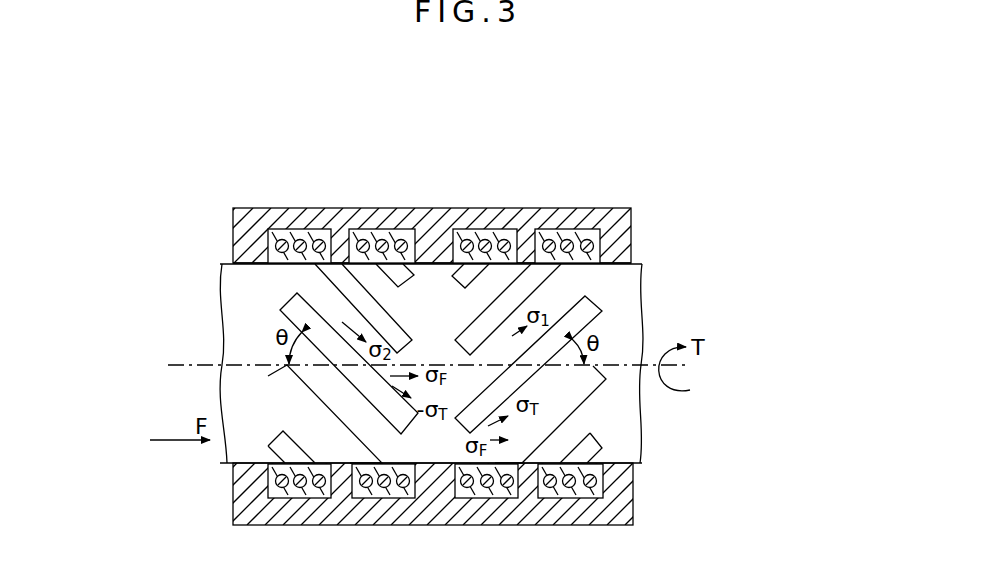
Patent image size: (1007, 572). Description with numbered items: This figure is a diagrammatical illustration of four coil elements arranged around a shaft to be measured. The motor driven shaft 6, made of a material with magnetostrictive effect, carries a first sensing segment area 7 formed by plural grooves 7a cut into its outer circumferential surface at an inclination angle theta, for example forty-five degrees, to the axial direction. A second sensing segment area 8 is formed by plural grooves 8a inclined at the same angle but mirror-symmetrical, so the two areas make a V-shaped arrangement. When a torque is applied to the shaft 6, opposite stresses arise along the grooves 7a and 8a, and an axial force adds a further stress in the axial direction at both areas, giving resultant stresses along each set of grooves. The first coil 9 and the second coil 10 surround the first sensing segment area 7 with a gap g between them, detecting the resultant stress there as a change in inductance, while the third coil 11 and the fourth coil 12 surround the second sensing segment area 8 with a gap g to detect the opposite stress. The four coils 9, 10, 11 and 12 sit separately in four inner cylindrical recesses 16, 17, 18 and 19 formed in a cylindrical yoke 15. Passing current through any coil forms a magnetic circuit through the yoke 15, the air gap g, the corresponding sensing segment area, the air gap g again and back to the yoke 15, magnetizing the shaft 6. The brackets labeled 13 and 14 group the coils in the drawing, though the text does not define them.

The motor driven shaft 6 is at (638, 448).
The first sensing segment area 7 is at (578, 363).
The grooves 7a is at (600, 309).
The second sensing segment area 8 is at (293, 363).
The grooves 8a is at (283, 305).
The first coil 9 is at (487, 229).
The second coil 10 is at (573, 229).
The third coil 11 is at (382, 229).
The fourth coil 12 is at (298, 229).
The coil pair group 13 is at (508, 160).
The coil group 14 is at (285, 127).
The cylindrical yoke 15 is at (632, 225).
The inner cylindrical recess 16 is at (561, 496).
The inner cylindrical recess 17 is at (490, 496).
The inner cylindrical recess 18 is at (385, 496).
The inner cylindrical recess 19 is at (312, 496).
The gap g is at (633, 262).